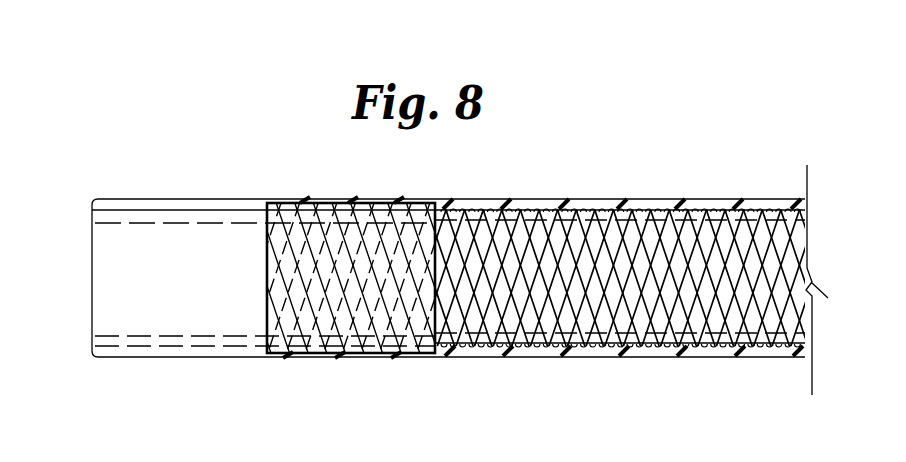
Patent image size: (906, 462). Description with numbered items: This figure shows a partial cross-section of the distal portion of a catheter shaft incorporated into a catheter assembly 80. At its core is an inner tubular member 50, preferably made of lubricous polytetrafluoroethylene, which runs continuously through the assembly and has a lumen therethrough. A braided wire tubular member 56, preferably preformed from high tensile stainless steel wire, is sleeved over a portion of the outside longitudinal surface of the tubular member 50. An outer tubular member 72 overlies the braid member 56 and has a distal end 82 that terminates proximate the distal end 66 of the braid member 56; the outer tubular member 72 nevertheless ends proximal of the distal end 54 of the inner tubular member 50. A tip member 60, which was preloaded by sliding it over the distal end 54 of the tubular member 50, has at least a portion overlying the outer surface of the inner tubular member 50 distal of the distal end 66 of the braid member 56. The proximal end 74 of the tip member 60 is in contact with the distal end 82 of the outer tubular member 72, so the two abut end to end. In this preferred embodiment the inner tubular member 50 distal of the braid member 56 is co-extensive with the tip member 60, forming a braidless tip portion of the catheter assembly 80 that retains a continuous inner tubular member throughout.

The tubular member 50 is at (125, 222).
The distal end of the tubular member 54 is at (92, 211).
The braided wire tubular member 56 is at (733, 208).
The tip member 60 is at (157, 199).
The distal end of the braid member 66 is at (267, 247).
The outer tubular member 72 is at (565, 199).
The proximal end of the tip member 74 is at (268, 357).
The catheter assembly 80 is at (652, 181).
The distal end of the outer tubular member 82 is at (290, 202).